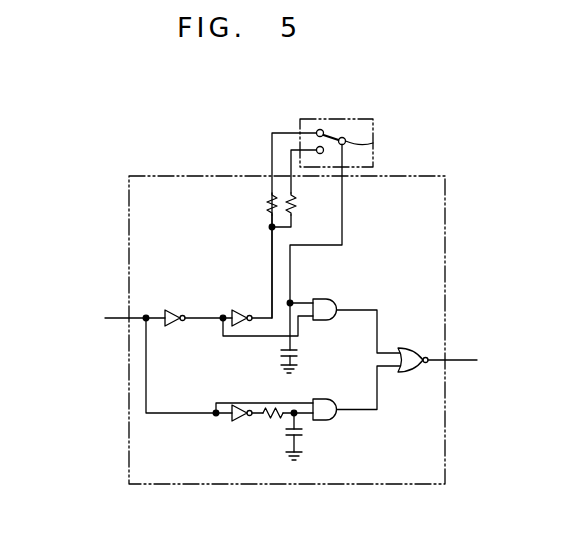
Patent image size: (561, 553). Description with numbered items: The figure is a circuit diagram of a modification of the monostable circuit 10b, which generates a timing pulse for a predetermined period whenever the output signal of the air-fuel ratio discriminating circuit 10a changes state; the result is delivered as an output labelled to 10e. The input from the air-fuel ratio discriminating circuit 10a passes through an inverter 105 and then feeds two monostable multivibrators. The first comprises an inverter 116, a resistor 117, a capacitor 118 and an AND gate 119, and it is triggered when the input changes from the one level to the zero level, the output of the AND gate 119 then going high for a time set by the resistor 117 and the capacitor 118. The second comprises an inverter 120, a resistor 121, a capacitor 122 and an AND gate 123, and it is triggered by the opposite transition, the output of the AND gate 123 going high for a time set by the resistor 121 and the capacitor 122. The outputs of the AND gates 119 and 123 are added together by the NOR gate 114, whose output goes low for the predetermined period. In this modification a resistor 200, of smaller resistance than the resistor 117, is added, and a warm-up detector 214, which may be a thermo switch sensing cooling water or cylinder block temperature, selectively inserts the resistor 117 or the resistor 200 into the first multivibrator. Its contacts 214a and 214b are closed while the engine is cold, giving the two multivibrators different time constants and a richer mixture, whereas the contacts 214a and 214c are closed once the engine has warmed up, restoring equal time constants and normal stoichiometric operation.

The air-fuel ratio discriminating circuit 10a is at (116, 316).
The monostable circuit 10b is at (135, 486).
The output destination 10e is at (492, 361).
The inverter 105 is at (171, 310).
The inverter 116 is at (240, 310).
The resistor 117 is at (294, 203).
The capacitor 118 is at (299, 352).
The AND gate 119 is at (323, 298).
The NOR gate 114 is at (405, 347).
The inverter 120 is at (233, 421).
The resistor 121 is at (270, 418).
The capacitor 122 is at (303, 433).
The AND gate 123 is at (322, 398).
The resistor 200 is at (270, 208).
The warm-up detector 214 is at (361, 118).
The contact 214a is at (371, 140).
The contact 214b is at (320, 130).
The contact 214c is at (291, 161).